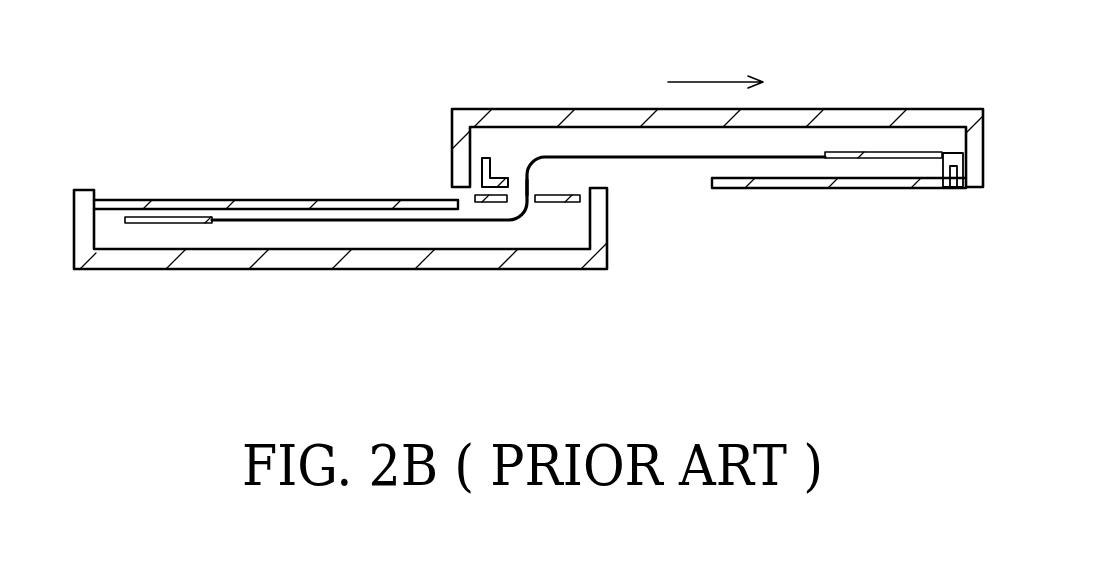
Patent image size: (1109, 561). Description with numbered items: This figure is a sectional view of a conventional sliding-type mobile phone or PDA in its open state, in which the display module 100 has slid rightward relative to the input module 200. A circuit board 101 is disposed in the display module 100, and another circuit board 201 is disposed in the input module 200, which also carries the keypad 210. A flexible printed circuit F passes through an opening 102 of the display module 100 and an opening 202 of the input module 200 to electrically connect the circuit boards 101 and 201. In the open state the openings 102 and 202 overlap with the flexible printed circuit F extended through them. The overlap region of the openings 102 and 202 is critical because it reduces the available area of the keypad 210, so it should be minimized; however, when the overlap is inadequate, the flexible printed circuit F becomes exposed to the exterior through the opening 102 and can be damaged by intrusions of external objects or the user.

The display module 100 is at (482, 76).
The circuit board 101 is at (880, 155).
The opening 102 is at (655, 175).
The input module 200 is at (578, 304).
The circuit board 201 is at (172, 223).
The opening 202 is at (527, 200).
The keypad 210 is at (291, 207).
The flexible printed circuit F is at (523, 180).